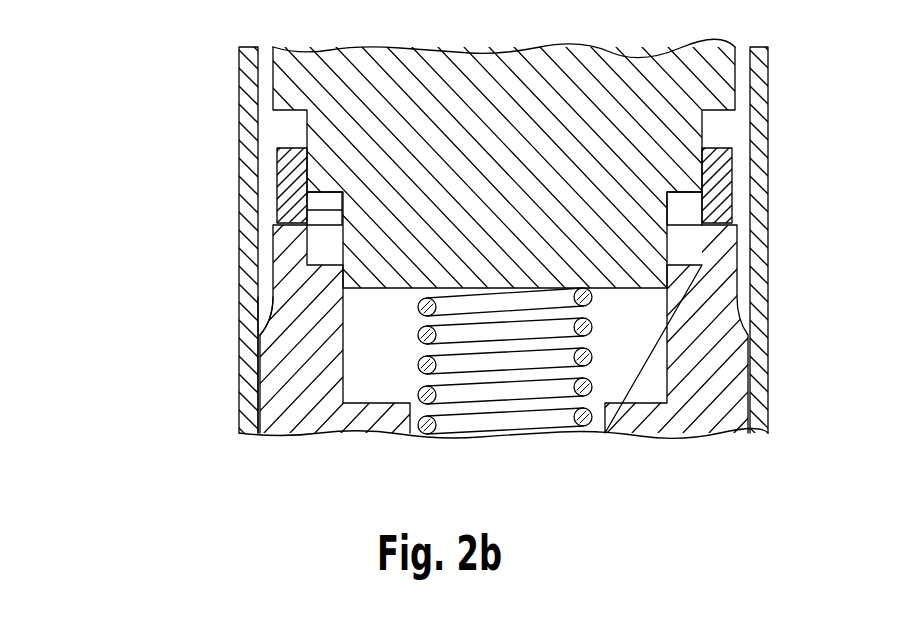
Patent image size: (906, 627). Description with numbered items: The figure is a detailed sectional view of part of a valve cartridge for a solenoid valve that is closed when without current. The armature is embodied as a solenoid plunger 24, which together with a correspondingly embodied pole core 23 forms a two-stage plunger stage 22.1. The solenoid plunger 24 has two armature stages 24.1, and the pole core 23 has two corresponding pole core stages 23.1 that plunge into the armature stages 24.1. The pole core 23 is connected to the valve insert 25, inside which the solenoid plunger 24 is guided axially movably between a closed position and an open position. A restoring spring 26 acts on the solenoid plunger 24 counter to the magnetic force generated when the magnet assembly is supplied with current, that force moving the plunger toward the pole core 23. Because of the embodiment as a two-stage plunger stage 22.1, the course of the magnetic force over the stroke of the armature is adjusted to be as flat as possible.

The two-stage plunger stage 22.1 is at (138, 195).
The pole core 23 is at (300, 82).
The pole core stages 23.1 is at (340, 210).
The solenoid plunger 24 is at (270, 388).
The armature stages 24.1 is at (343, 348).
The valve insert 25 is at (248, 335).
The restoring spring 26 is at (530, 418).